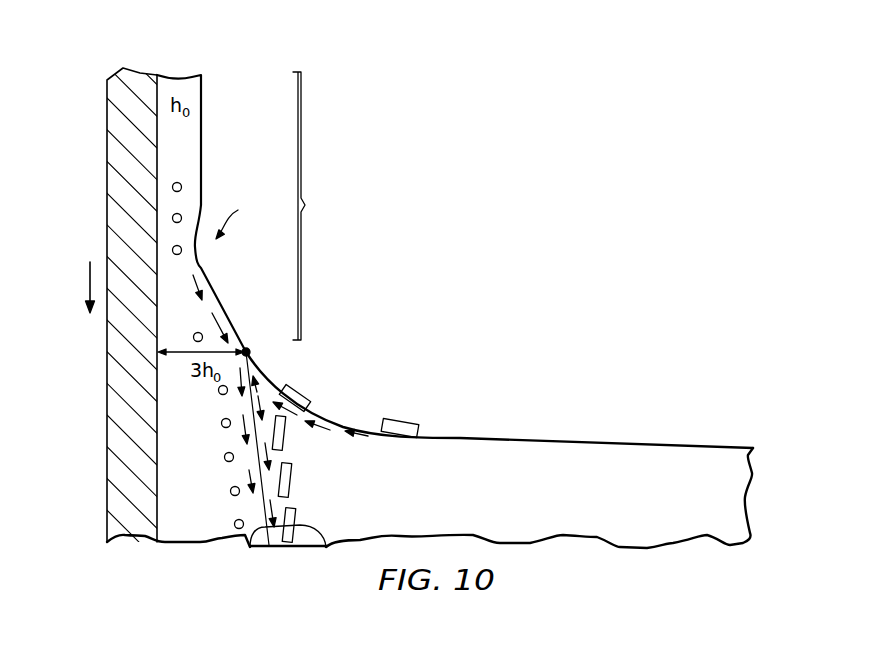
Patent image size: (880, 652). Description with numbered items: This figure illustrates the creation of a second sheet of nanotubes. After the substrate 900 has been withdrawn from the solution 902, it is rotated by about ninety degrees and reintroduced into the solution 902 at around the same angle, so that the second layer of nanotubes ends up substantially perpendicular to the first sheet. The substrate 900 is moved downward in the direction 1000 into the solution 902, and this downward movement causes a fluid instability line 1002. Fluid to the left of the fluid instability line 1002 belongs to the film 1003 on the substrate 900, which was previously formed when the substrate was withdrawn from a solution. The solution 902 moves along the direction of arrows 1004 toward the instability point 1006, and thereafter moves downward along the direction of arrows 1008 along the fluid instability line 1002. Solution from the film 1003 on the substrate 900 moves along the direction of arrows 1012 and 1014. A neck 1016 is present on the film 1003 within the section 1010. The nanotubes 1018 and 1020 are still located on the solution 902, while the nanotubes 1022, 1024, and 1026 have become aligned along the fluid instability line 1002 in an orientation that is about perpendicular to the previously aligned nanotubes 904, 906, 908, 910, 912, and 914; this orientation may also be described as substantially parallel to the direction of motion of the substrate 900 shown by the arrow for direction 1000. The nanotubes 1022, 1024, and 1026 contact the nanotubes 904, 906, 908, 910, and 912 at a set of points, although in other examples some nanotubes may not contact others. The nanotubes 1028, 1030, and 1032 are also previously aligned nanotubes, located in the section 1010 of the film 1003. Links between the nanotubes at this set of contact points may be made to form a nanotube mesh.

The substrate 900 is at (105, 146).
The solution 902 is at (495, 502).
The nanotube 904 is at (194, 336).
The nanotube 906 is at (219, 389).
The nanotube 908 is at (222, 422).
The nanotube 910 is at (225, 456).
The nanotube 912 is at (231, 494).
The nanotube 914 is at (235, 526).
The direction 1000 is at (88, 282).
The fluid instability line 1002 is at (250, 549).
The film 1003 is at (180, 93).
The arrows 1004 is at (362, 430).
The instability point 1006 is at (248, 349).
The arrows 1008 is at (268, 455).
The section 1010 is at (324, 206).
The arrows 1012 is at (204, 282).
The arrows 1014 is at (244, 478).
The neck 1016 is at (239, 211).
The nanotube 1018 is at (403, 421).
The nanotube 1020 is at (305, 390).
The nanotube 1022 is at (286, 442).
The nanotube 1024 is at (293, 483).
The nanotube 1026 is at (321, 548).
The nanotube 1028 is at (172, 187).
The nanotube 1030 is at (172, 218).
The nanotube 1032 is at (172, 250).